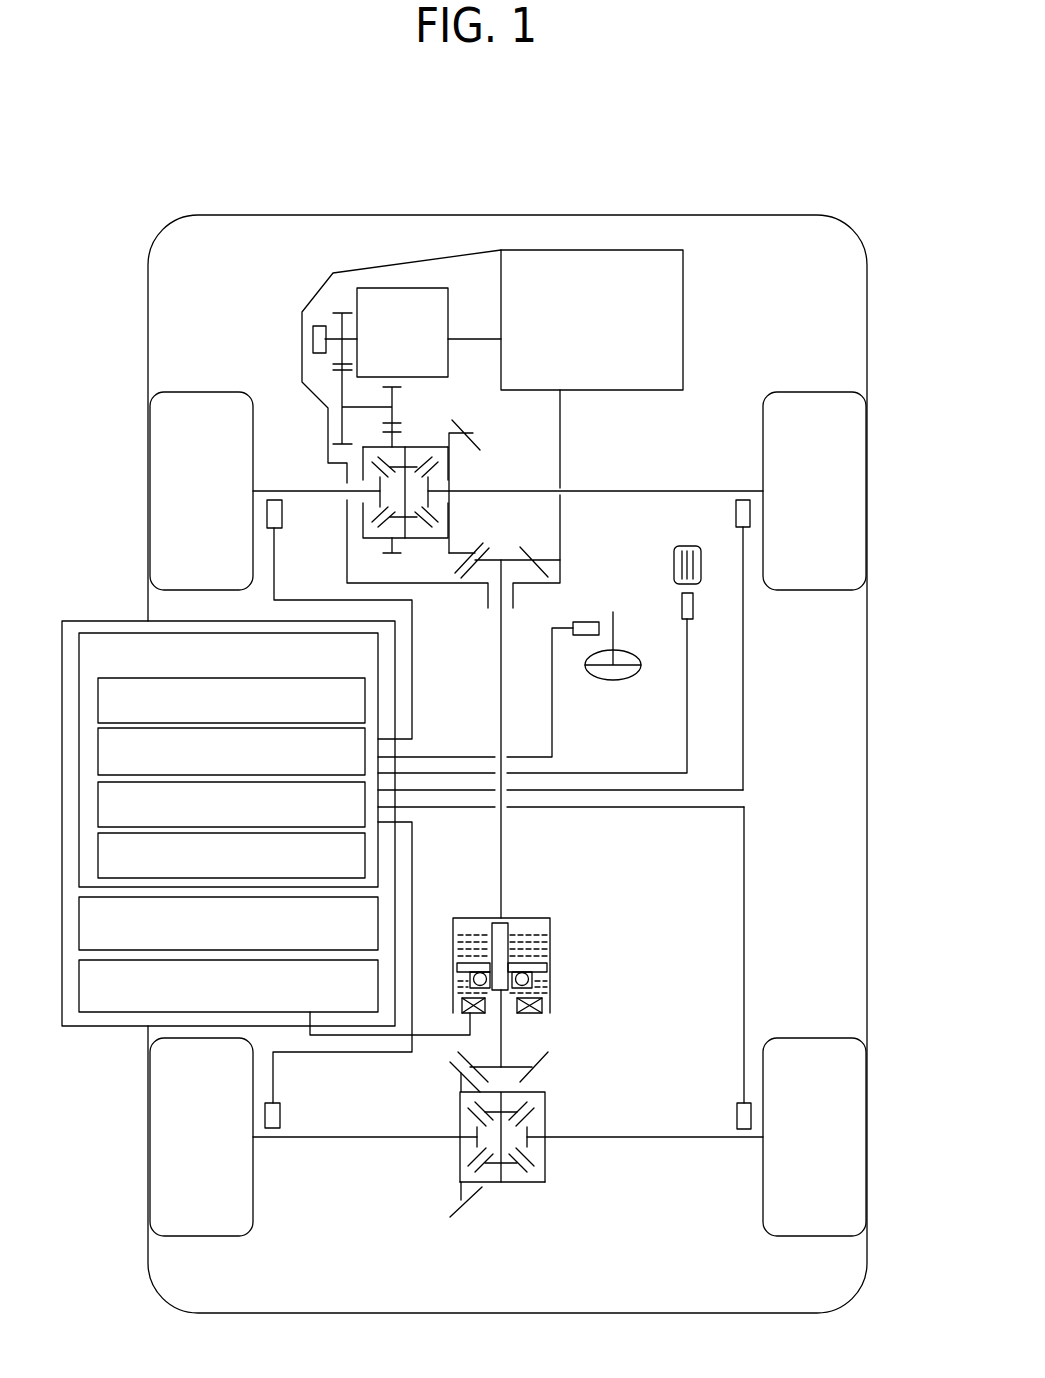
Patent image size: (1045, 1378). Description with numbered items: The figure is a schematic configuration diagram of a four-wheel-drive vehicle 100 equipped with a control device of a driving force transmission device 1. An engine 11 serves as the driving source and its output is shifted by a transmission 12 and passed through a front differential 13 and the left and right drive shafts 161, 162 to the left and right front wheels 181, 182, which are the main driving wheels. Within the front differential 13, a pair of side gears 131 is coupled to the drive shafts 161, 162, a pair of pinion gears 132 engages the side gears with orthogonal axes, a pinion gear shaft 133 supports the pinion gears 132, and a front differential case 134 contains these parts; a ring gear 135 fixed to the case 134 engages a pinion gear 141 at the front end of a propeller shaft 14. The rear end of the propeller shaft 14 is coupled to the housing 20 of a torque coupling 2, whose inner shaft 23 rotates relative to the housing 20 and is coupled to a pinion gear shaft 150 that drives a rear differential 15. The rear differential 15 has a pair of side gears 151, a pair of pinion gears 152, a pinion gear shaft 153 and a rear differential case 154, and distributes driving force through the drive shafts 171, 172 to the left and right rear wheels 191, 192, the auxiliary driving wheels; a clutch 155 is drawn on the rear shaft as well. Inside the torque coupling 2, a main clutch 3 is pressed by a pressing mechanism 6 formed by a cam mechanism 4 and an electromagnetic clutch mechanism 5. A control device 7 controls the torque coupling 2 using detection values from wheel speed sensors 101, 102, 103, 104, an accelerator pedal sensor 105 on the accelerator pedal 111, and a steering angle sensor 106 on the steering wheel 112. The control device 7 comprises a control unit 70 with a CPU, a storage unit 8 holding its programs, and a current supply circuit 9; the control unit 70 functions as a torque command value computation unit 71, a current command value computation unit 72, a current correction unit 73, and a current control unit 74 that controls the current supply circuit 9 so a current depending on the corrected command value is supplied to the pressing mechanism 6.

The four-wheel-drive vehicle 100 is at (799, 159).
The driving force transmission device 1 is at (460, 933).
The torque coupling 2 is at (520, 935).
The main clutch 3 is at (550, 935).
The cam mechanism 4 is at (543, 967).
The electromagnetic clutch mechanism 5 is at (548, 990).
The pressing mechanism 6 is at (585, 945).
The control device 7 is at (412, 862).
The storage unit 8 is at (79, 925).
The current supply circuit 9 is at (79, 988).
The engine 11 is at (627, 250).
The transmission 12 is at (395, 288).
The front differential 13 is at (362, 548).
The propeller shaft 14 is at (500, 695).
The rear differential 15 is at (558, 1181).
The housing 20 is at (463, 918).
The inner shaft 23 is at (498, 922).
The control unit 70 is at (77, 655).
The torque command value computation unit 71 is at (98, 702).
The current command value computation unit 72 is at (98, 755).
The current correction unit 73 is at (98, 807).
The current control unit 74 is at (98, 857).
The wheel speed sensor 101 is at (274, 498).
The wheel speed sensor 102 is at (743, 497).
The wheel speed sensor 103 is at (280, 1112).
The wheel speed sensor 104 is at (737, 1107).
The accelerator pedal sensor 105 is at (693, 612).
The steering angle sensor 106 is at (587, 620).
The accelerator pedal 111 is at (687, 543).
The steering wheel 112 is at (622, 680).
The side gear 131 is at (383, 498).
The pinion gear 132 is at (413, 466).
The pinion gear shaft 133 is at (397, 488).
The front differential case 134 is at (372, 447).
The ring gear 135 is at (475, 433).
The pinion gear 141 is at (542, 563).
The pinion gear shaft 150 is at (505, 1038).
The side gear 151 is at (475, 1147).
The pinion gear 152 is at (512, 1110).
The pinion gear shaft 153 is at (497, 1133).
The rear differential case 154 is at (525, 1183).
The rear clutch 155 is at (457, 1063).
The drive shaft 161 is at (317, 491).
The drive shaft 162 is at (610, 489).
The drive shaft 171 is at (372, 1138).
The drive shaft 172 is at (695, 1140).
The front wheel 181 is at (162, 462).
The front wheel 182 is at (857, 463).
The rear wheel 191 is at (162, 1160).
The rear wheel 192 is at (857, 1162).